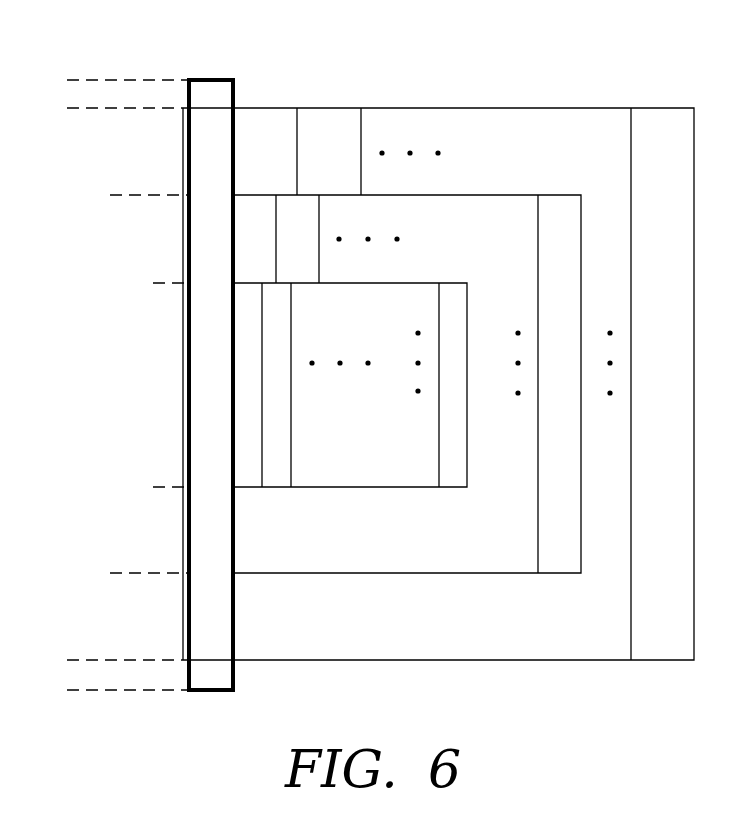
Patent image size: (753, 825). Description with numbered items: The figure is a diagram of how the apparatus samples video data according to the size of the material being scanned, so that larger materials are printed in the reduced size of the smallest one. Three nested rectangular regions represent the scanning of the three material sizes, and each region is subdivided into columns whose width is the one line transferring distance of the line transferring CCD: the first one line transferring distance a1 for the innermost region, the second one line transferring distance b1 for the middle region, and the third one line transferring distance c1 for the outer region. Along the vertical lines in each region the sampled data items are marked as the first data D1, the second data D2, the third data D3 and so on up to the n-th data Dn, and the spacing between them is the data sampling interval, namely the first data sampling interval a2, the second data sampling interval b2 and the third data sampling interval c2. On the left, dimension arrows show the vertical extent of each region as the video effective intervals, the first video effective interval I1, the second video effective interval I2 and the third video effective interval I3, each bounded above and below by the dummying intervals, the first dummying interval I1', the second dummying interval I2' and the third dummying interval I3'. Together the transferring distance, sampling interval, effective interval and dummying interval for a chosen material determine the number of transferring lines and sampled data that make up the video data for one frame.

The first data D1 is at (448, 283).
The second data D2 is at (558, 195).
The third data D3 is at (657, 108).
The n-th data Dn is at (435, 293).
The first video effective interval I1 is at (155, 385).
The second video effective interval I2 is at (110, 384).
The third video effective interval I3 is at (66, 384).
The first dummying interval I1' is at (151, 384).
The second dummying interval I2' is at (107, 384).
The third dummying interval I3' is at (112, 388).
The first one line transferring distance a1 is at (240, 333).
The second one line transferring distance b1 is at (245, 217).
The third one line transferring distance c1 is at (361, 153).
The first data sampling interval a2 is at (453, 487).
The second data sampling interval b2 is at (560, 571).
The third data sampling interval c2 is at (660, 645).